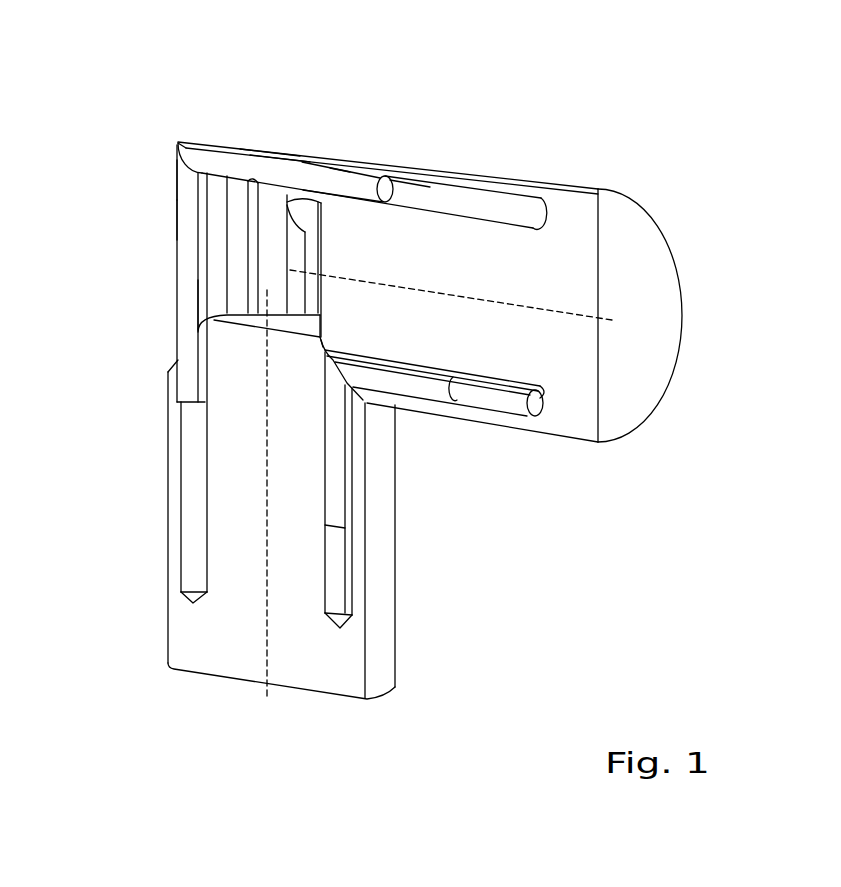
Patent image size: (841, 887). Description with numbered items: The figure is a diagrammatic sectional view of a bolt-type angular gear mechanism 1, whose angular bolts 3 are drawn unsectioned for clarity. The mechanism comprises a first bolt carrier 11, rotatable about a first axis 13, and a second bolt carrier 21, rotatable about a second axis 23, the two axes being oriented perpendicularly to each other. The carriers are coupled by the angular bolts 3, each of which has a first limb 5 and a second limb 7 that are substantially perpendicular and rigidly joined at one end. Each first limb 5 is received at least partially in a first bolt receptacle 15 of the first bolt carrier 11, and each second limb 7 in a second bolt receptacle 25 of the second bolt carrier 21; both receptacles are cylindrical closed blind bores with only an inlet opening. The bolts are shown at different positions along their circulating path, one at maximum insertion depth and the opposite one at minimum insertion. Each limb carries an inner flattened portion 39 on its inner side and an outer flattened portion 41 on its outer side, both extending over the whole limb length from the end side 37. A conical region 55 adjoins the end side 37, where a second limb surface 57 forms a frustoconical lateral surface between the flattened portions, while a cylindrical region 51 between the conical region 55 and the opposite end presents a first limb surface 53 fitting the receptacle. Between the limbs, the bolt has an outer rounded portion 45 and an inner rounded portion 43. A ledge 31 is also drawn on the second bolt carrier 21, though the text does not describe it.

The bolt-type angular gear mechanism 1 is at (77, 37).
The angular bolt 3 is at (183, 341).
The first limb 5 is at (355, 154).
The second limb 7 is at (132, 212).
The first bolt carrier 11 is at (394, 278).
The first axis 13 is at (660, 315).
The first bolt receptacle 15 is at (446, 296).
The second bolt carrier 21 is at (237, 507).
The second axis 23 is at (234, 512).
The second bolt receptacle 25 is at (264, 515).
The ledge 31 is at (386, 548).
The end side 37 is at (439, 147).
The inner flattened portion 39 is at (138, 305).
The outer flattened portion 41 is at (332, 215).
The inner rounded portion 43 is at (127, 175).
The outer rounded portion 45 is at (163, 112).
The cylindrical region 51 is at (275, 105).
The first limb surface 53 is at (291, 125).
The conical region 55 is at (379, 117).
The second limb surface 57 is at (370, 152).